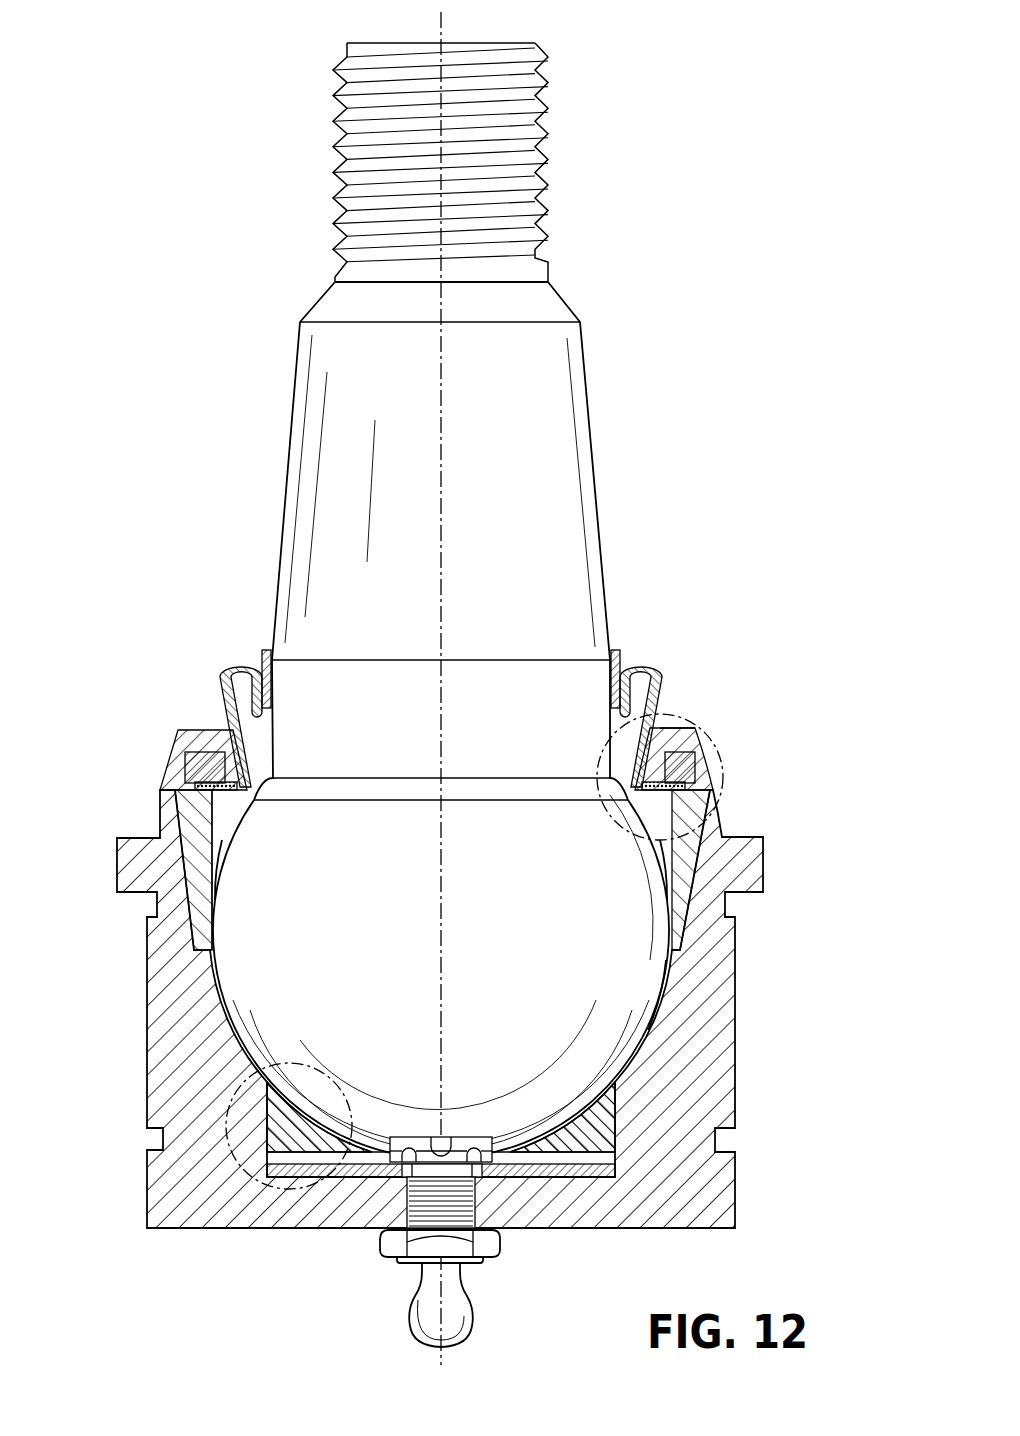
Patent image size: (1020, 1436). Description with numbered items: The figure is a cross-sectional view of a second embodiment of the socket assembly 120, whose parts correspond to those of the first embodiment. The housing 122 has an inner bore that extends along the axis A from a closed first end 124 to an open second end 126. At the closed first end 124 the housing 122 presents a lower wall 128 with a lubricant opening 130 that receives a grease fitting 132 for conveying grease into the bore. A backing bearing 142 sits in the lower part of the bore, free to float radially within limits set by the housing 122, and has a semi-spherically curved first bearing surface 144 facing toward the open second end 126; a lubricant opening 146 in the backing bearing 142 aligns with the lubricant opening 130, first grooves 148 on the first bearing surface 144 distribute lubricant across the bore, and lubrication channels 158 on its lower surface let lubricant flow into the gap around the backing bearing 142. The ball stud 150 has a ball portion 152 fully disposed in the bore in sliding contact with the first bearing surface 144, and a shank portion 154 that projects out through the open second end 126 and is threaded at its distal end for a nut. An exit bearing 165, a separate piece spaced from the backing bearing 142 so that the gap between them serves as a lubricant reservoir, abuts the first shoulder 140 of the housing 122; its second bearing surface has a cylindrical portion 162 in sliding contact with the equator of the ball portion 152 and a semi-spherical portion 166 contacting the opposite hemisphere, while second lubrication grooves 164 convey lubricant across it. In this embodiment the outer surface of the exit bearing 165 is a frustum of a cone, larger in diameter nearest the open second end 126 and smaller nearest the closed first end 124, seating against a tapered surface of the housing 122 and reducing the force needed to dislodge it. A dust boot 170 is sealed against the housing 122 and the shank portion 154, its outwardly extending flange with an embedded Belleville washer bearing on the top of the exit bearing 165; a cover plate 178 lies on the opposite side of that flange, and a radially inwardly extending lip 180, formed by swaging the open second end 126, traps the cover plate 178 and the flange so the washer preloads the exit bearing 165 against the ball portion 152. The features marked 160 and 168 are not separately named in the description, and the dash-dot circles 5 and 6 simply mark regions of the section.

The axis A is at (441, 32).
The socket assembly 120 is at (438, 682).
The housing 122 is at (403, 1069).
The closed first end 124 is at (550, 1232).
The open second end 126 is at (688, 740).
The lower wall 128 is at (257, 1208).
The lubricant opening 130 is at (422, 1203).
The grease fitting 132 is at (450, 1313).
The first shoulder 140 is at (190, 927).
The backing bearing 142 is at (418, 1089).
The first bearing surface 144 is at (300, 1060).
The lubricant opening 146 is at (407, 1150).
The first grooves 148 is at (567, 1100).
The ball stud 150 is at (455, 600).
The ball portion 152 is at (396, 885).
The shank portion 154 is at (365, 368).
The lubrication channels 158 is at (597, 1160).
The right upper bearing 160 is at (688, 932).
The cylindrical portion 162 is at (180, 867).
The second lubrication grooves 164 is at (660, 967).
The exit bearing 165 is at (194, 826).
The semi-spherical portion 166 is at (220, 845).
The ball upper right surface 168 is at (657, 840).
The dust boot 170 is at (244, 664).
The cover plate 178 is at (703, 758).
The radially inwardly extending lip 180 is at (195, 730).
The detail circle 5 is at (236, 1163).
The detail circle 6 is at (723, 773).